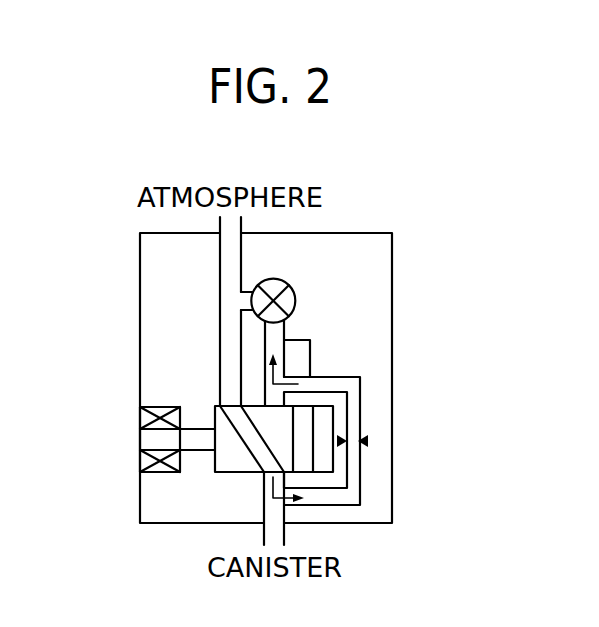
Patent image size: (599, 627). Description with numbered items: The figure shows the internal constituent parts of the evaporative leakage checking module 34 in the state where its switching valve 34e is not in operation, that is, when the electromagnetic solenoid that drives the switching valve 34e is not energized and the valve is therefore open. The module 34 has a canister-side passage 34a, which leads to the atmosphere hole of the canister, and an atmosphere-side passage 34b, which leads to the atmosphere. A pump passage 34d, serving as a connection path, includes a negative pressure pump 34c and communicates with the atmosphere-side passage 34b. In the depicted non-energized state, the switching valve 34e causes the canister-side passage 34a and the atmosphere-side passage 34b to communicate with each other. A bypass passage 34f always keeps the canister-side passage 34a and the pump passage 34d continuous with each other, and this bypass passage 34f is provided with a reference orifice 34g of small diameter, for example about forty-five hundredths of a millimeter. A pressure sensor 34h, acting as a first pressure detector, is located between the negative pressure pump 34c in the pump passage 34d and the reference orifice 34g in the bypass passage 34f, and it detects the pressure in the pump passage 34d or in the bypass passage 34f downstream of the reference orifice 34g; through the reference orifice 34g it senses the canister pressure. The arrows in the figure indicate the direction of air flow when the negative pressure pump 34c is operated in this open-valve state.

The evaporative leakage checking module 34 is at (395, 200).
The canister-side passage 34a is at (273, 510).
The atmosphere-side passage 34b is at (230, 271).
The negative pressure pump 34c is at (295, 294).
The pump passage 34d is at (276, 333).
The switching valve 34e is at (220, 463).
The bypass passage 34f is at (352, 409).
The reference orifice 34g is at (368, 441).
The pressure sensor 34h is at (302, 358).